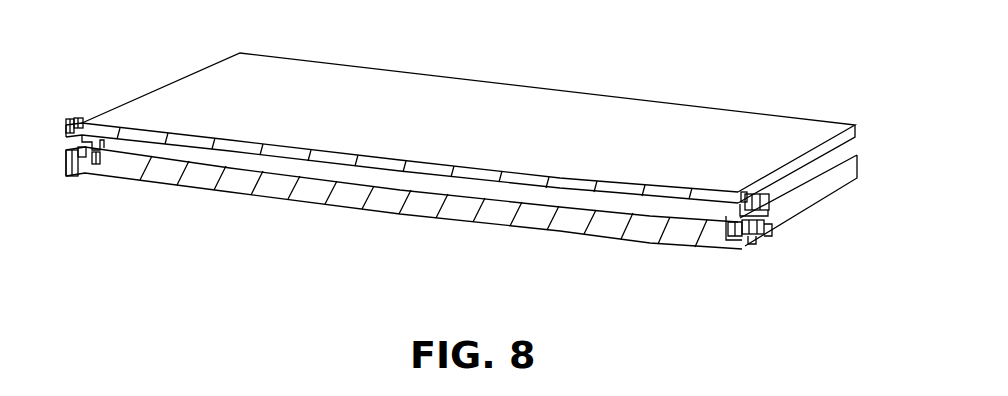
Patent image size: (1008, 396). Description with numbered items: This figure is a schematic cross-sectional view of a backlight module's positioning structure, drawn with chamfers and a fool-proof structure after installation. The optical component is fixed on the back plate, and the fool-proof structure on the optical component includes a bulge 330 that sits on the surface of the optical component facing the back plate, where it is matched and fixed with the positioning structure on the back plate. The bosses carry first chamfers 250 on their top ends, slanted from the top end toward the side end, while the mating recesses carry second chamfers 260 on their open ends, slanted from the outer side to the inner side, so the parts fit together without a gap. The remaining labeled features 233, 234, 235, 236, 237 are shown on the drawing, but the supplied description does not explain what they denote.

The clamp 237 is at (102, 105).
The second chamfer 260 is at (76, 152).
The locking block 236 is at (118, 160).
The bulge 330 is at (742, 190).
The bracket 235 is at (744, 190).
The connecting seat 233 is at (770, 198).
The first chamfer 250 is at (766, 222).
The mounting seat 234 is at (720, 213).